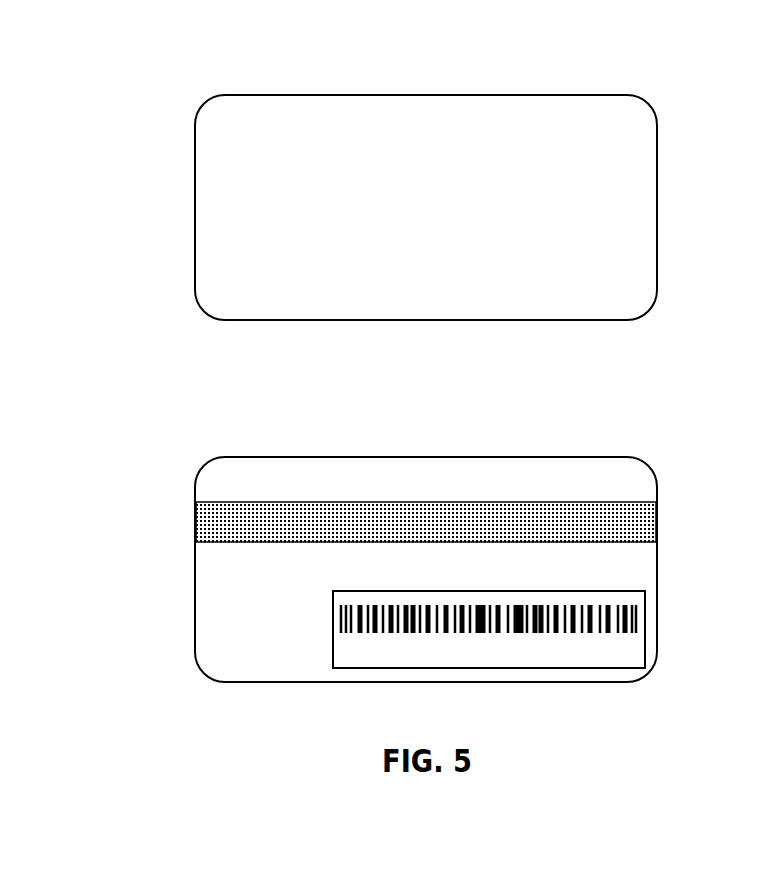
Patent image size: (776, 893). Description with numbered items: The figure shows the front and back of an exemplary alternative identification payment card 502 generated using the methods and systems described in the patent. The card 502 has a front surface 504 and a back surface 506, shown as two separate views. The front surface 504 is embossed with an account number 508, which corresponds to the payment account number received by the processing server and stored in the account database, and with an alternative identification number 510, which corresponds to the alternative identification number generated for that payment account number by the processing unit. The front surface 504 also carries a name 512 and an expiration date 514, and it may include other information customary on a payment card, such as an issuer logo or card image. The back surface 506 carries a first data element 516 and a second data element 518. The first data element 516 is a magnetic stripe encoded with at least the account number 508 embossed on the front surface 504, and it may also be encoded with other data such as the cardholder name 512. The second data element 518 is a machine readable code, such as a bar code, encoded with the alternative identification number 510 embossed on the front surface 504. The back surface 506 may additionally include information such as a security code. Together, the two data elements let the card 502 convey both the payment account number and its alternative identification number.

The alternative identification payment card 502 is at (600, 93).
The front surface 504 is at (630, 132).
The back surface 506 is at (630, 482).
The account number 508 is at (218, 193).
The alternative identification number 510 is at (587, 290).
The name 512 is at (217, 242).
The expiration date 514 is at (640, 242).
The first data element 516 is at (633, 522).
The second data element 518 is at (645, 618).